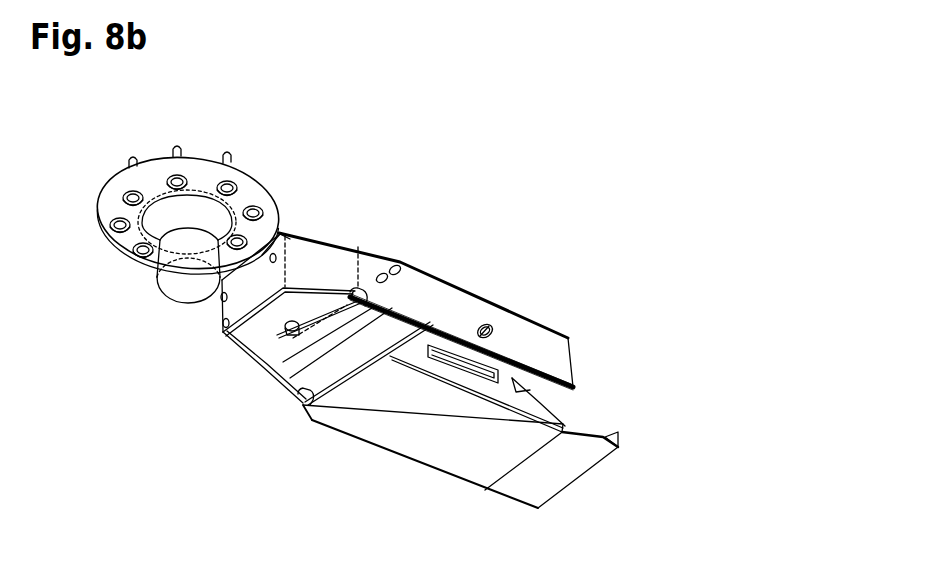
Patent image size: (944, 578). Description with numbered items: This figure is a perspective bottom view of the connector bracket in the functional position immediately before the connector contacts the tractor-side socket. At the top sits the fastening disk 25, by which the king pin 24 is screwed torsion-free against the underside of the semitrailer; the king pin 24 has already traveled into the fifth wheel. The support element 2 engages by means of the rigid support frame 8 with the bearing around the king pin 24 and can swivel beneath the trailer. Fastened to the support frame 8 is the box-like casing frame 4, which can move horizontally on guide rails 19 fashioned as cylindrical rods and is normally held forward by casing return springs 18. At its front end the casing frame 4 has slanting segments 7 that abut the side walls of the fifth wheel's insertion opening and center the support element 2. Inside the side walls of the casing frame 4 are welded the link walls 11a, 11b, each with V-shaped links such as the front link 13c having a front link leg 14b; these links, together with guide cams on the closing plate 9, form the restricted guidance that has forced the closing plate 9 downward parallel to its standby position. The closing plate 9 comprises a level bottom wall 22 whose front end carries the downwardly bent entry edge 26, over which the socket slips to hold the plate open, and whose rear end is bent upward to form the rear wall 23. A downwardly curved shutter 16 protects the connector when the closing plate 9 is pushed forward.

The support element 2 is at (531, 160).
The casing frame 4 is at (500, 323).
The slanting segment 7 is at (310, 263).
The support frame 8 is at (327, 307).
The closing plate 9 is at (460, 456).
The link wall 11a is at (357, 297).
The link wall 11b is at (280, 383).
The link 13c is at (253, 364).
The front link leg 14b is at (220, 322).
The shutter 16 is at (398, 328).
The casing return spring 18 is at (450, 327).
The guide rail 19 is at (283, 233).
The bottom wall 22 is at (433, 458).
The rear wall 23 is at (613, 432).
The king pin 24 is at (188, 263).
The fastening disk 25 is at (110, 180).
The entry edge 26 is at (303, 408).